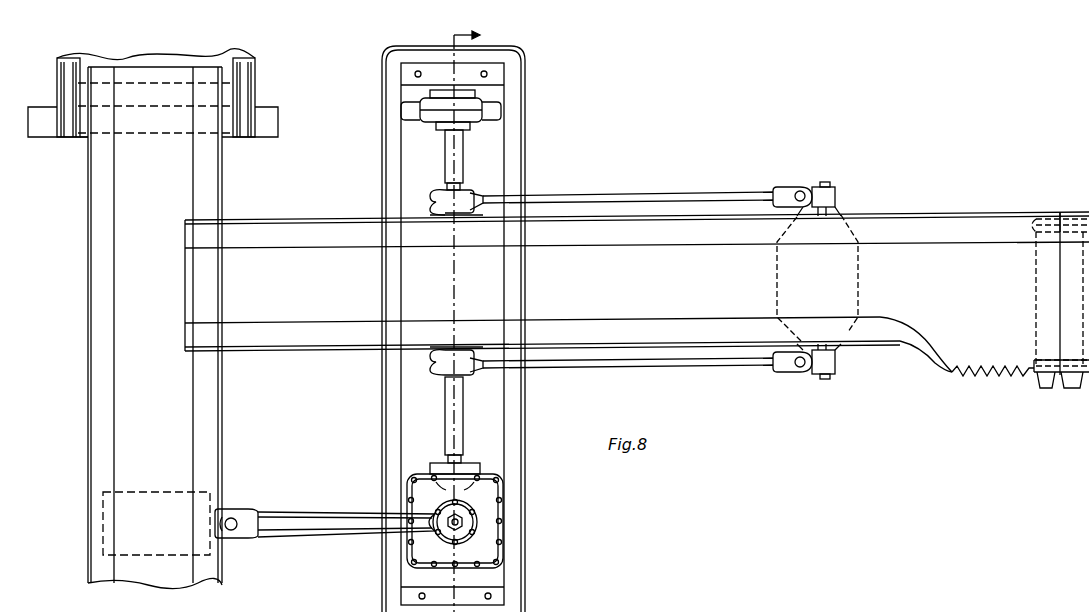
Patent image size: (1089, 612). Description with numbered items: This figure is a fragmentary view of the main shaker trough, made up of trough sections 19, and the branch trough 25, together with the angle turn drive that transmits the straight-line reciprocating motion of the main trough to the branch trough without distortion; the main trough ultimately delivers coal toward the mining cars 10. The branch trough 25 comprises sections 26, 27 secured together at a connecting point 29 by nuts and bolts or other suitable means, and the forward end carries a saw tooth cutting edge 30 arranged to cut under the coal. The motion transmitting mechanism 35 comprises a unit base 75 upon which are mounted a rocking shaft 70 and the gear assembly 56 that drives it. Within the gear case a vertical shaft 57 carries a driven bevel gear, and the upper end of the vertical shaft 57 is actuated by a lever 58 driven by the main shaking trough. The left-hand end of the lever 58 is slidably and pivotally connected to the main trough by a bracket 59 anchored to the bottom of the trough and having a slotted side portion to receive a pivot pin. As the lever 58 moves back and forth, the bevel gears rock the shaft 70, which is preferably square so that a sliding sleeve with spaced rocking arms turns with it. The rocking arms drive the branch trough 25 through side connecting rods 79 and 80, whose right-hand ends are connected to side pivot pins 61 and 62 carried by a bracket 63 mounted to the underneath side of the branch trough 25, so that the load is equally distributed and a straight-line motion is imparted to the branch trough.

The mining cars 10 is at (478, 319).
The trough sections 19 is at (88, 414).
The branch trough 25 is at (898, 212).
The section 26 is at (945, 212).
The section 27 is at (1086, 212).
The connecting point 29 is at (1030, 219).
The saw tooth cutting edge 30 is at (987, 372).
The motion transmitting mechanism 35 is at (525, 160).
The gear assembly 56 is at (495, 520).
The vertical shaft 57 is at (462, 520).
The lever 58 is at (316, 540).
The bracket 59 is at (236, 510).
The side pivot pin 61 is at (826, 182).
The side pivot pin 62 is at (826, 379).
The bracket 63 is at (848, 332).
The rocking shaft 70 is at (464, 418).
The unit base 75 is at (518, 566).
The side connecting rod 79 is at (612, 363).
The side connecting rod 80 is at (696, 198).